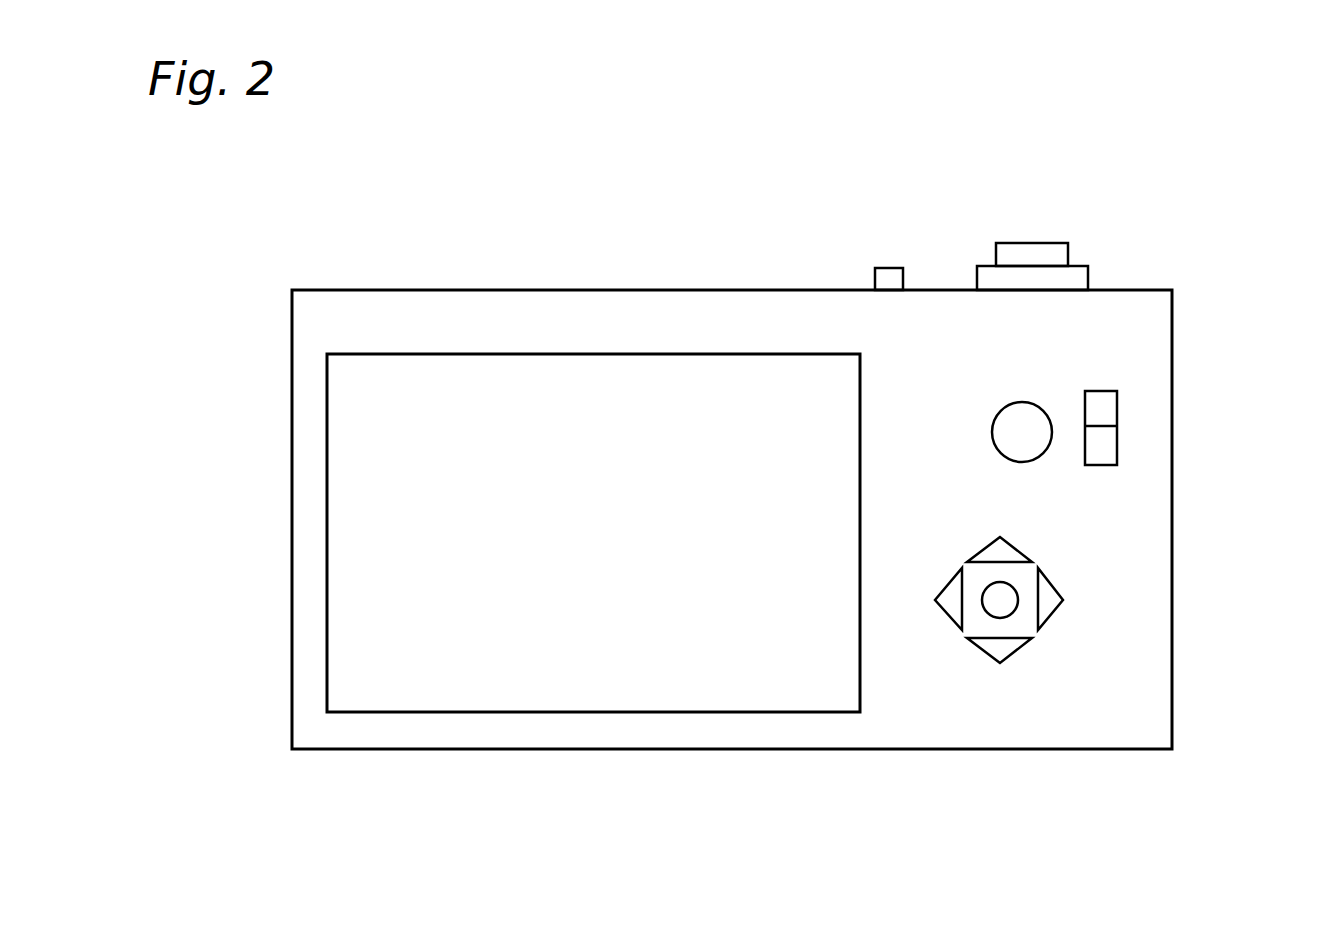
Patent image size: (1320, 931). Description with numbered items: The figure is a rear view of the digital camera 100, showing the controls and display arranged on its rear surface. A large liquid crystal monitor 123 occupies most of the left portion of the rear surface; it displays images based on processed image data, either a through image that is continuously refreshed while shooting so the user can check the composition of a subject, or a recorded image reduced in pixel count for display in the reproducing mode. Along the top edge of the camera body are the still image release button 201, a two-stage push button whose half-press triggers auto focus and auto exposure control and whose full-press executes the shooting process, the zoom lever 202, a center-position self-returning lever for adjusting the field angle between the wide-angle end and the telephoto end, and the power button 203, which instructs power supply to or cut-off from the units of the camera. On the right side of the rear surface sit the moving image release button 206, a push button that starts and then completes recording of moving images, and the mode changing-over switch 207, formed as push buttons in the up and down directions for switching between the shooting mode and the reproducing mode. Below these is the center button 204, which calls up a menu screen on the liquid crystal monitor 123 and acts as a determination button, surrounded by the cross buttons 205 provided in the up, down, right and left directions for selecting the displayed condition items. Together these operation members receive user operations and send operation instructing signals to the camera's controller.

The digital camera 100 is at (412, 213).
The liquid crystal monitor 123 is at (523, 518).
The still image release button 201 is at (1057, 250).
The zoom lever 202 is at (1078, 280).
The power button 203 is at (875, 268).
The center button 204 is at (1002, 602).
The cross buttons 205 is at (997, 647).
The moving image release button 206 is at (1020, 432).
The mode changing-over switch 207 is at (1093, 436).